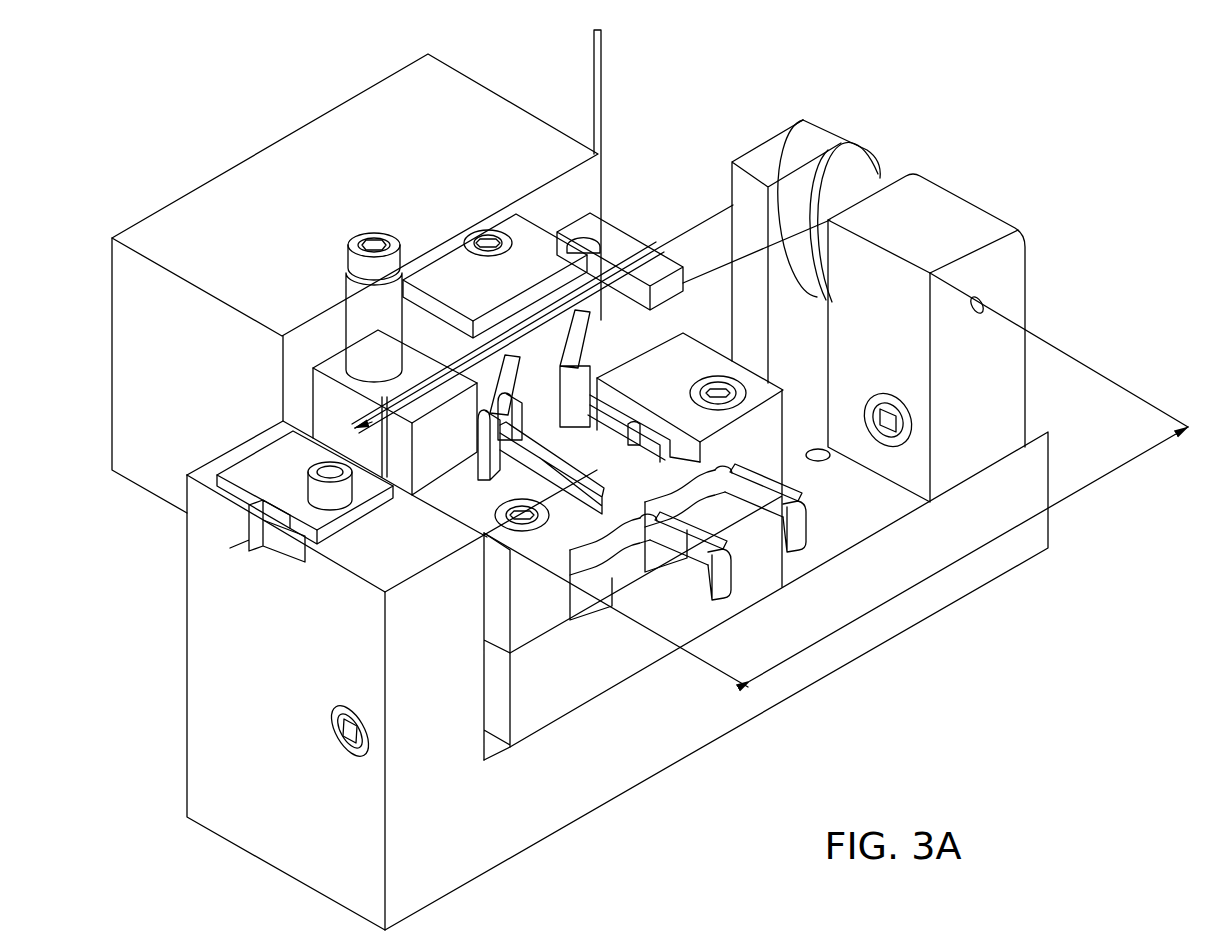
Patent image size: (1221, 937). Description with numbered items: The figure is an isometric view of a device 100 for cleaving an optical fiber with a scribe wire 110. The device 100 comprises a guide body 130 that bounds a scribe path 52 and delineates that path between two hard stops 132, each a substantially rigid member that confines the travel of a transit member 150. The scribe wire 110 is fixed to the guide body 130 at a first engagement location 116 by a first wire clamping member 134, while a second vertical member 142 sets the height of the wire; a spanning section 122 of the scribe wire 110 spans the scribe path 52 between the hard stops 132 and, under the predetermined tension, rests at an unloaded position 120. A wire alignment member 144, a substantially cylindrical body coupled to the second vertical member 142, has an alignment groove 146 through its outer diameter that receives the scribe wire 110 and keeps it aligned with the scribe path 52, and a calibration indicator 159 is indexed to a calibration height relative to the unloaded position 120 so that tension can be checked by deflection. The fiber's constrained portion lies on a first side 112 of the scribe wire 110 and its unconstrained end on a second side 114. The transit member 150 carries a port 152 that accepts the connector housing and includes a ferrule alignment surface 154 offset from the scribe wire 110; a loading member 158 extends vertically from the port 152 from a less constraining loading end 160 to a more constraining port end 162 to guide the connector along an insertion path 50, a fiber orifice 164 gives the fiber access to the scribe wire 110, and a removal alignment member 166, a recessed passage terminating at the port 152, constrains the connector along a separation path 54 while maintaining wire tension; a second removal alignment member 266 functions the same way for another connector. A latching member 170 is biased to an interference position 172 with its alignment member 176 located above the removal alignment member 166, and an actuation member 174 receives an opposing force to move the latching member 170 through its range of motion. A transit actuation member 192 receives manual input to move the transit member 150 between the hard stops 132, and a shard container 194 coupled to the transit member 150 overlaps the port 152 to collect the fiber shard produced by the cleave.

The device 100 is at (1026, 184).
The insertion path 50 is at (485, 318).
The scribe path 52 is at (668, 250).
The separation path 54 is at (632, 511).
The scribe wire 110 is at (757, 248).
The first side 112 is at (717, 280).
The second side 114 is at (705, 267).
The first engagement location 116 is at (360, 462).
The unloaded position 120 is at (742, 238).
The spanning section 122 is at (1082, 495).
The guide body 130 is at (604, 797).
The hard stop 132 is at (886, 392).
The first wire clamping member 134 is at (258, 466).
The second vertical member 142 is at (1022, 292).
The wire alignment member 144 is at (826, 162).
The alignment groove 146 is at (878, 172).
The transit member 150 is at (782, 460).
The port 152 is at (519, 445).
The ferrule alignment surface 154 is at (490, 408).
The loading member 158 is at (480, 368).
The calibration indicator 159 is at (678, 306).
The loading end 160 is at (471, 330).
The port end 162 is at (516, 398).
The fiber orifice 164 is at (412, 318).
The removal alignment member 166 is at (584, 470).
The latching member 170 is at (478, 492).
The interference position 172 is at (478, 474).
The actuation member 174 is at (694, 580).
The alignment member 176 is at (483, 452).
The transit actuation member 192 is at (374, 232).
The shard container 194 is at (204, 186).
The second removal alignment member 266 is at (662, 422).